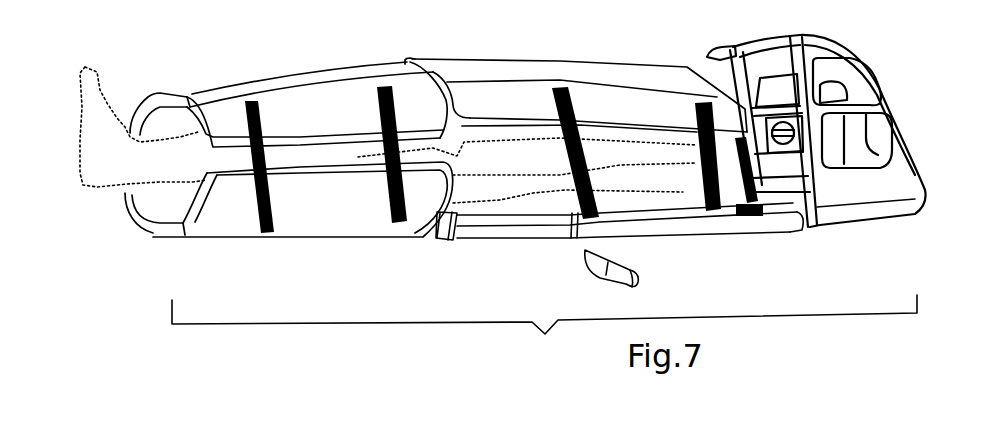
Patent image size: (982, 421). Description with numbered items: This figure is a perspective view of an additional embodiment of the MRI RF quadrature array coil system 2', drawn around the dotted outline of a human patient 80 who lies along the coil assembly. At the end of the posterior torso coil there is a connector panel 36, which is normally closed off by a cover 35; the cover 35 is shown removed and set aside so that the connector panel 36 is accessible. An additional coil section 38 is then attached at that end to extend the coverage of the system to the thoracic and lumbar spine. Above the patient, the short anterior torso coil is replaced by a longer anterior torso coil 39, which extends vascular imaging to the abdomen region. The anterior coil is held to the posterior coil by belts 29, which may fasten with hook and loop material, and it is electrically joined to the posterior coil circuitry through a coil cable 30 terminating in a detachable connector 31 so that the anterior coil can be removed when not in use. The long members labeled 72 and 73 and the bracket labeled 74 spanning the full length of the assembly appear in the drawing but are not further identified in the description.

The upper support beam 72 is at (300, 83).
The human patient 80 is at (513, 163).
The longer anterior torso coil 39 is at (626, 73).
The lower support beam 73 is at (333, 210).
The additional coil section 38 is at (497, 210).
The connector panel 36 is at (574, 240).
The cover 35 is at (620, 283).
The belts 29 is at (597, 200).
The coil cable 30 is at (743, 170).
The detachable connector 31 is at (750, 213).
The system 2' is at (816, 145).
The overall assembly 74 is at (544, 327).